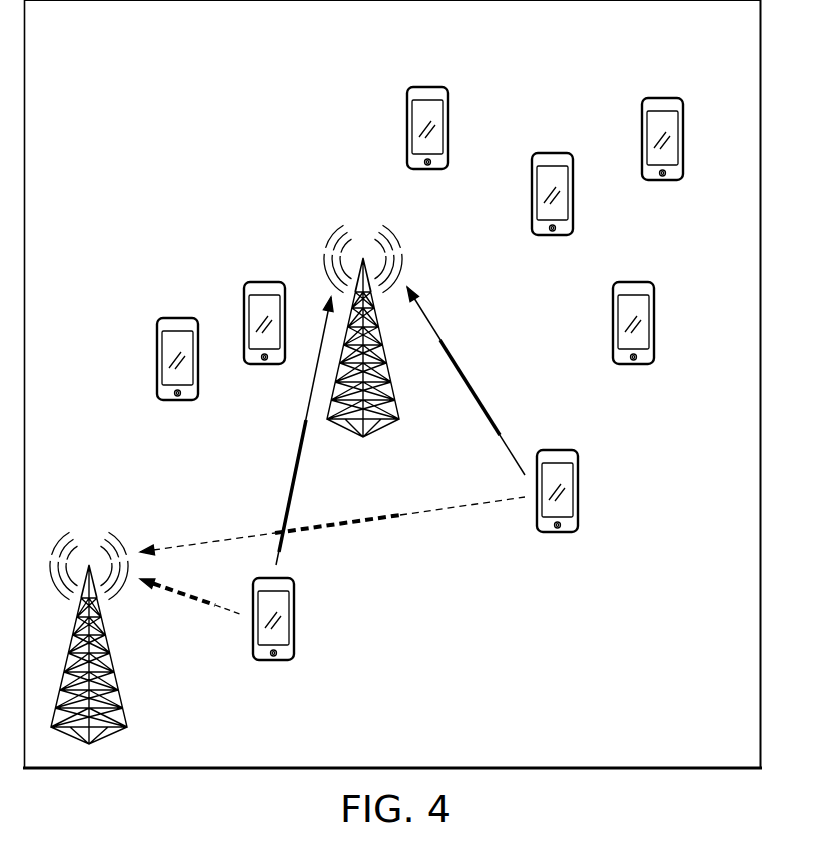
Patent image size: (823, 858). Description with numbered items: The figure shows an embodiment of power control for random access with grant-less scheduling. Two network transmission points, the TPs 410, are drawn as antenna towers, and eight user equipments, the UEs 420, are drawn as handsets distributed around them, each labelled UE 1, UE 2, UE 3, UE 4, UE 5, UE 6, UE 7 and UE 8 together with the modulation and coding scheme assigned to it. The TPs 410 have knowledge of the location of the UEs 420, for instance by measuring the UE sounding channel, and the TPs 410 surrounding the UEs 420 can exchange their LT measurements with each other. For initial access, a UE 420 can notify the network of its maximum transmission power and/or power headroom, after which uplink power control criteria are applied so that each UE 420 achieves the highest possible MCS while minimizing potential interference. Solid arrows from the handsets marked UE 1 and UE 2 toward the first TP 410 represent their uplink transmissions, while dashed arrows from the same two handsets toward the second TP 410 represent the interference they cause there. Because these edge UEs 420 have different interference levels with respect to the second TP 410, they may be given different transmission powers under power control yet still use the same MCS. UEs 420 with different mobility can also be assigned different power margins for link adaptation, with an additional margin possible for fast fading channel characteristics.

The network transmission point (TP) 410 is at (382, 428).
The user equipment (UE) 420 is at (418, 368).
The UE1 user equipment 1 is at (312, 619).
The UE2 user equipment 2 is at (556, 458).
The UE3 user equipment 3 is at (632, 290).
The UE4 user equipment 4 is at (662, 106).
The UE5 user equipment 5 is at (553, 159).
The UE6 user equipment 6 is at (428, 94).
The UE7 user equipment 7 is at (265, 290).
The UE8 user equipment 8 is at (177, 326).